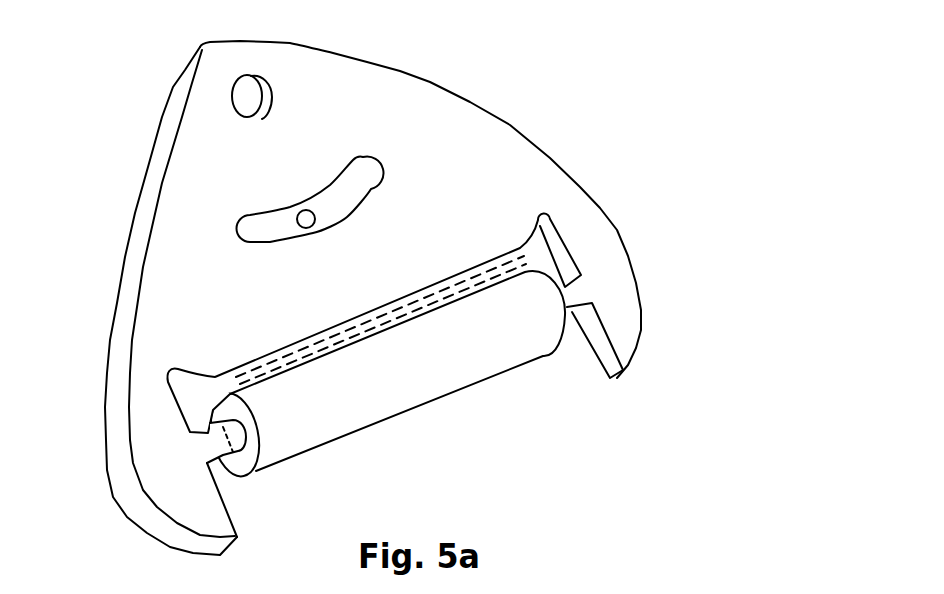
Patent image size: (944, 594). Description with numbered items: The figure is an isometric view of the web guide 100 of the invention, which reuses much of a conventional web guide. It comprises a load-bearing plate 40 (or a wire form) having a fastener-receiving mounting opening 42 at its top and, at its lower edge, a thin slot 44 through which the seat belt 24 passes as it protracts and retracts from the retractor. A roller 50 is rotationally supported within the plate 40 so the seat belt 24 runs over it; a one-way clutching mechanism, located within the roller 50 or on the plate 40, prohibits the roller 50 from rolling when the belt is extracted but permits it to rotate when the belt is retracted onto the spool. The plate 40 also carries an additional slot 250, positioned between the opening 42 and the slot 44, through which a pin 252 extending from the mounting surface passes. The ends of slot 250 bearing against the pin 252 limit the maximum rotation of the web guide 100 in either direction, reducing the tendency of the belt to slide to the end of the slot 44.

The web guide 100 is at (340, 299).
The plate 40 is at (538, 174).
The fastener-receiving opening 42 is at (257, 108).
The additional slot 250 is at (267, 215).
The pin 252 is at (306, 228).
The seat belt 24 is at (437, 296).
The roller 50 is at (521, 373).
The slot 44 is at (217, 412).